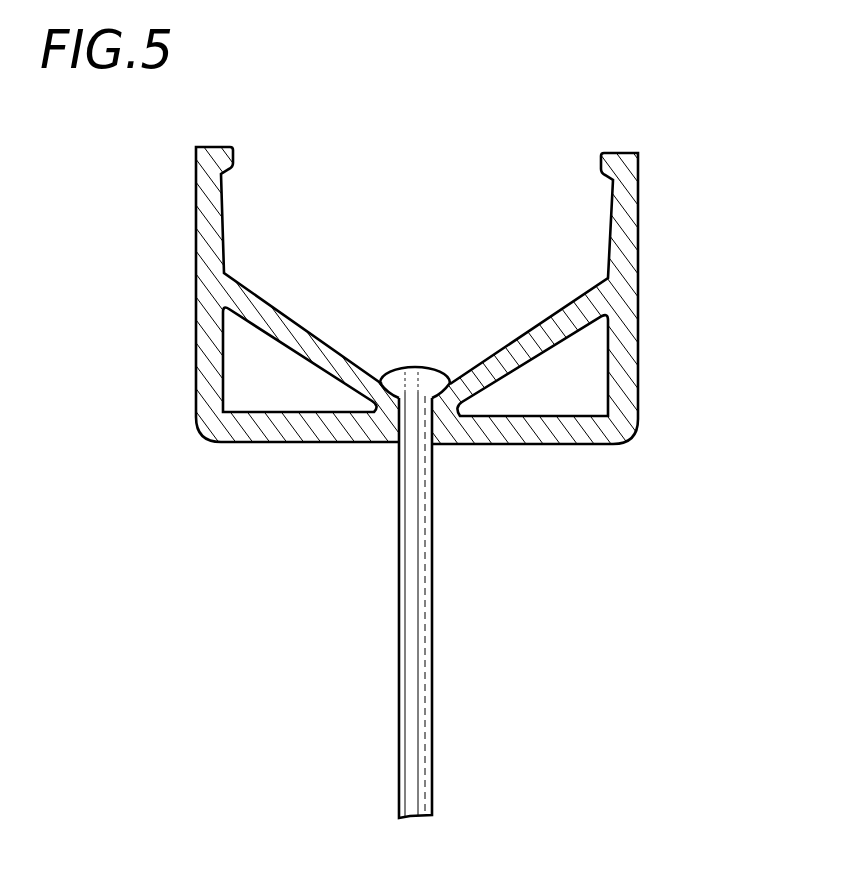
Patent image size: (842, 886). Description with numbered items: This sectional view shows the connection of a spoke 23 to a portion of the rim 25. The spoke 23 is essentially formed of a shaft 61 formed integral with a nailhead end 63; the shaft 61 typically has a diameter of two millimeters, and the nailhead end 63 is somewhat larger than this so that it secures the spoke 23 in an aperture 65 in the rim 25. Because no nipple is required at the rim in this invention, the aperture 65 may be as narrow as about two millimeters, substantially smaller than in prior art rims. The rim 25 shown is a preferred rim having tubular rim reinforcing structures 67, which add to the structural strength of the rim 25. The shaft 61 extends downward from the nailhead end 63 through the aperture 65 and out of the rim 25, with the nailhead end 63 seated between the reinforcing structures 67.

The rim 25 is at (208, 250).
The tubular rim reinforcing structures 67 is at (258, 370).
The aperture 65 is at (431, 372).
The nailhead end 63 is at (410, 372).
The shaft 61 is at (420, 587).
The spoke 23 is at (420, 673).